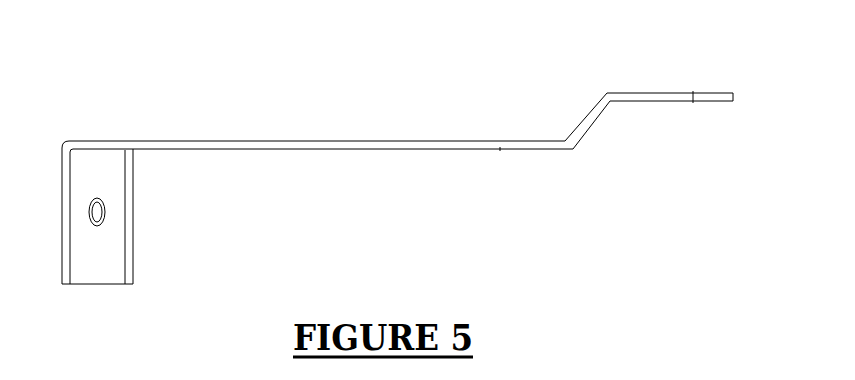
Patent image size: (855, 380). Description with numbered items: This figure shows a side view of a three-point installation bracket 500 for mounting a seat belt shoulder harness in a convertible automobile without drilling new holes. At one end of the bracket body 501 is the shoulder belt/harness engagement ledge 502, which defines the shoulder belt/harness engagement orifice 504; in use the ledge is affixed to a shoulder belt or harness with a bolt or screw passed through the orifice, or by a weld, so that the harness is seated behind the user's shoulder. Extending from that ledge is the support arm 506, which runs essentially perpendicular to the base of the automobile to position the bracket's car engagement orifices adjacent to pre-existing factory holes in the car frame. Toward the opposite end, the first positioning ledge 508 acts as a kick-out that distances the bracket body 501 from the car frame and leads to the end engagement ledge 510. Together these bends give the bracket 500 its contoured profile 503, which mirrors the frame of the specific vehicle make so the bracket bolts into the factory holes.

The three-point installation bracket 500 is at (668, 173).
The bracket body 501 is at (383, 147).
The shoulder belt/harness engagement ledge 502 is at (112, 268).
The contoured profile 503 is at (153, 147).
The shoulder belt/harness engagement orifice 504 is at (92, 213).
The support arm 506 is at (252, 142).
The first positioning ledge 508 is at (590, 117).
The end engagement ledge 510 is at (662, 93).